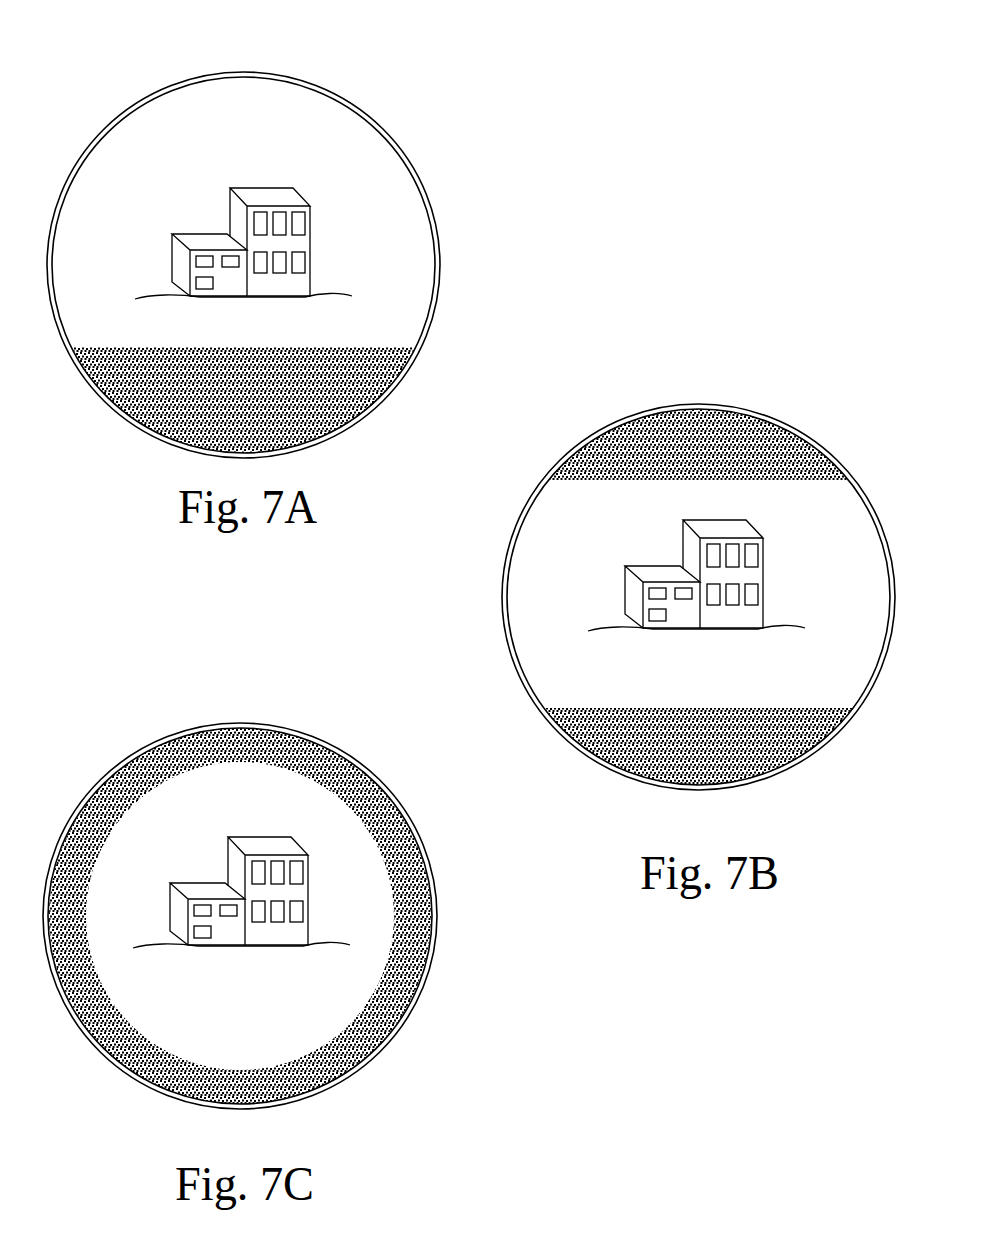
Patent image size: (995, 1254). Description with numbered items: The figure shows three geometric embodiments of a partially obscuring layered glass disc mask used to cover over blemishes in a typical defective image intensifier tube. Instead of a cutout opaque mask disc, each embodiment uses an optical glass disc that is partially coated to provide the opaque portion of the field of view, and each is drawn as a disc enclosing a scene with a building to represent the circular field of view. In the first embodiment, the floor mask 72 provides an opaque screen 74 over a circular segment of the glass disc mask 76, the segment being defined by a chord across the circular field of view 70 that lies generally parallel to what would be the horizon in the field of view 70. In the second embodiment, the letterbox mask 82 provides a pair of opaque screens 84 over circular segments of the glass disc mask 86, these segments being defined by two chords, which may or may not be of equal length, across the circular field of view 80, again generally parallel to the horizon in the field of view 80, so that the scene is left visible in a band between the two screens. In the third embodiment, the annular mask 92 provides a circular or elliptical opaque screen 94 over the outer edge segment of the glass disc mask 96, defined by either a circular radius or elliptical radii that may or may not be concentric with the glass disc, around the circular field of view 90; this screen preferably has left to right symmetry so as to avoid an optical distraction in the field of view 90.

In FIG. 7A, the circular field of view 70 is at (184, 168).
In FIG. 7A, the floor mask 72 is at (390, 117).
In FIG. 7A, the opaque screen 74 is at (370, 333).
In FIG. 7A, the glass disc mask 76 is at (55, 205).
In FIG. 7B, the circular field of view 80 is at (826, 587).
In FIG. 7B, the letterbox mask 82 is at (776, 406).
In FIG. 7B, the pair of opaque screens 84 is at (582, 498).
In FIG. 7B, the glass disc mask 86 is at (533, 490).
In FIG. 7C, the circular field of view 90 is at (181, 845).
In FIG. 7C, the annular mask 92 is at (339, 727).
In FIG. 7C, the opaque screen 94 is at (217, 1042).
In FIG. 7C, the glass disc mask 96 is at (52, 855).